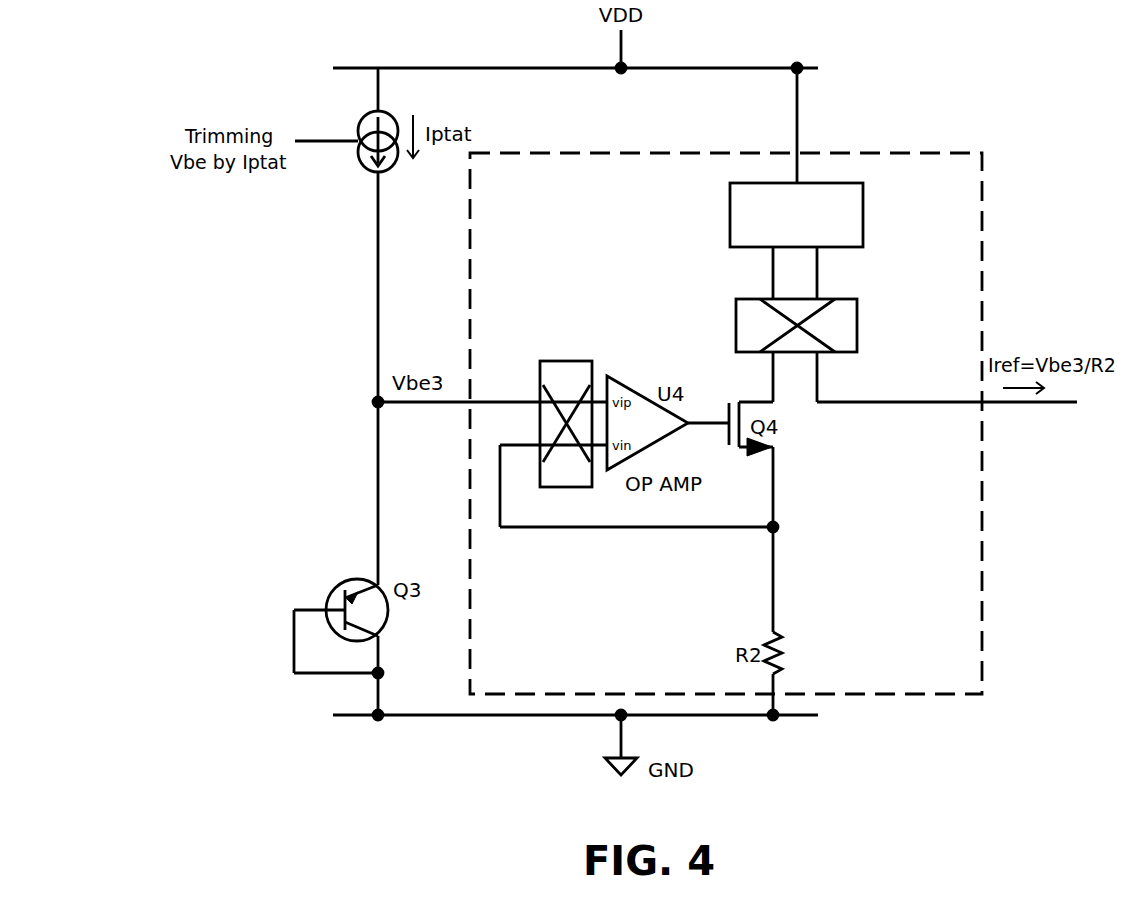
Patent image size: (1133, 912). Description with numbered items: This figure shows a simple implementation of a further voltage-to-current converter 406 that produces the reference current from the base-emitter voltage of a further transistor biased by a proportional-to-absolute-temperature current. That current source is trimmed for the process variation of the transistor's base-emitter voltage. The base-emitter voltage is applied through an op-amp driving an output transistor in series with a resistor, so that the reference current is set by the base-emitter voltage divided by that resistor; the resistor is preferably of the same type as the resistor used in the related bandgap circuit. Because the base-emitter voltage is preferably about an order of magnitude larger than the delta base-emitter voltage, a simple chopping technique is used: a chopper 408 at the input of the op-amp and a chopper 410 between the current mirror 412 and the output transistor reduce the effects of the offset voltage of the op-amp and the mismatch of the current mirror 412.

The voltage-to-current converter 406 is at (663, 150).
The chopper 408 is at (562, 361).
The chopper 410 is at (850, 296).
The current mirror 412 is at (866, 213).